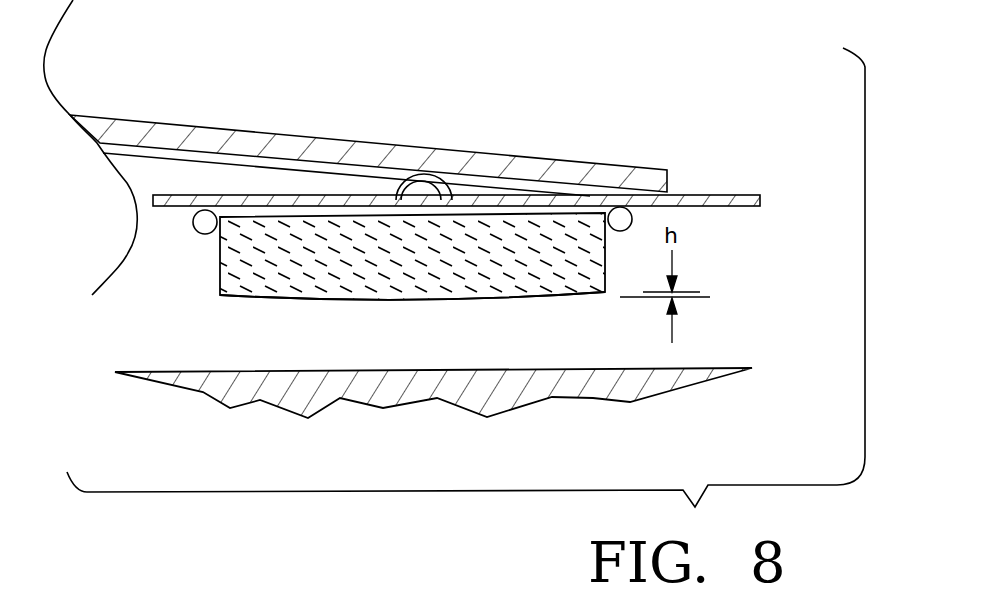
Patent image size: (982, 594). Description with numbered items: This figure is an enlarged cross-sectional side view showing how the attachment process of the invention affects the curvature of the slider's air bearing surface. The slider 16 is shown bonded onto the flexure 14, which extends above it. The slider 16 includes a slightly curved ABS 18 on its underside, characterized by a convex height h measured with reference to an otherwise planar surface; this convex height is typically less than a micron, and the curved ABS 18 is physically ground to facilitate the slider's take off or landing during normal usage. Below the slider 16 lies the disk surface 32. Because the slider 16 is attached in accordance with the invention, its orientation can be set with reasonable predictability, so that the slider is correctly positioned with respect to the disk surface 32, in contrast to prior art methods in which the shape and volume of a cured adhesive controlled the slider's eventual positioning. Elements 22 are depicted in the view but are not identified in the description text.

The flexure 14 is at (760, 197).
The slider 16 is at (220, 262).
The ABS 18 is at (305, 298).
The contact bumps 22 is at (205, 234).
The disk surface 32 is at (703, 363).